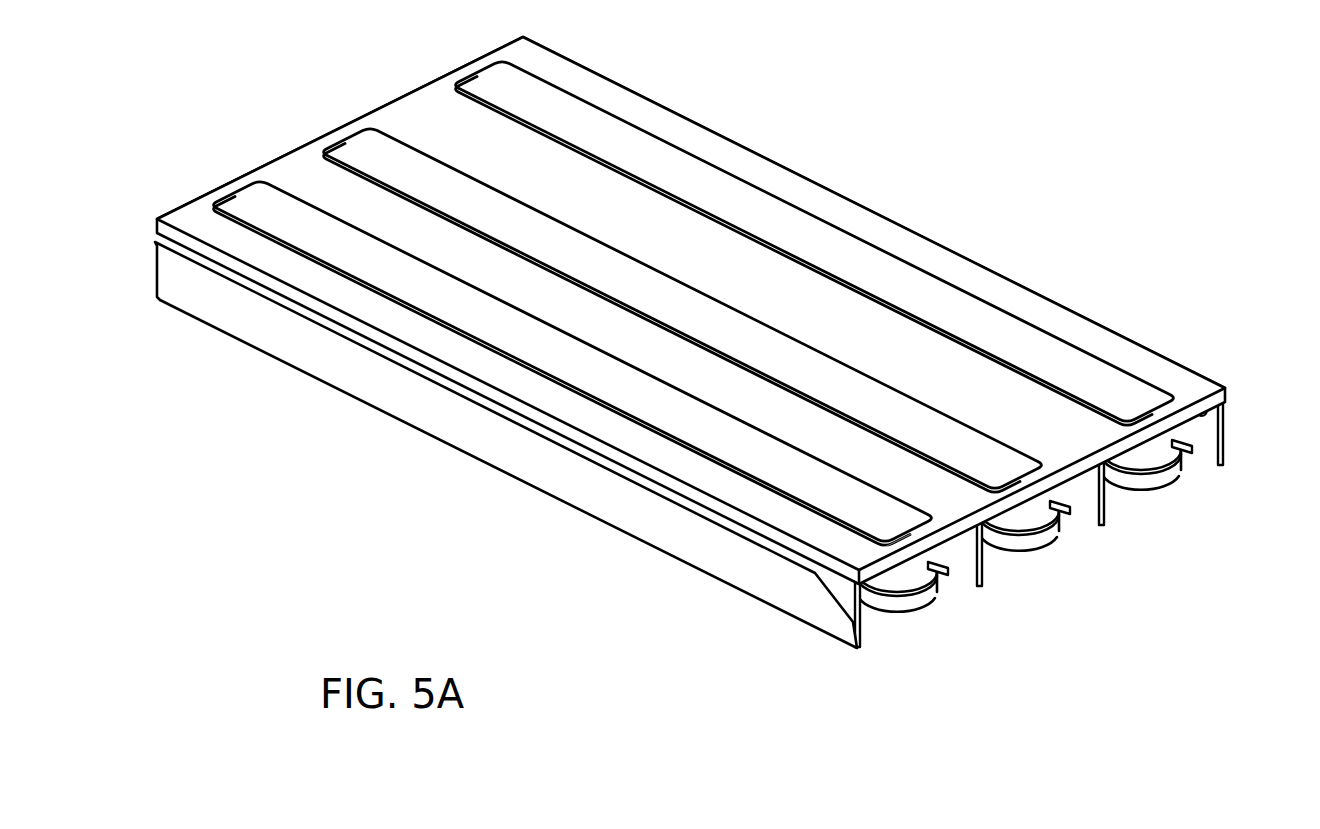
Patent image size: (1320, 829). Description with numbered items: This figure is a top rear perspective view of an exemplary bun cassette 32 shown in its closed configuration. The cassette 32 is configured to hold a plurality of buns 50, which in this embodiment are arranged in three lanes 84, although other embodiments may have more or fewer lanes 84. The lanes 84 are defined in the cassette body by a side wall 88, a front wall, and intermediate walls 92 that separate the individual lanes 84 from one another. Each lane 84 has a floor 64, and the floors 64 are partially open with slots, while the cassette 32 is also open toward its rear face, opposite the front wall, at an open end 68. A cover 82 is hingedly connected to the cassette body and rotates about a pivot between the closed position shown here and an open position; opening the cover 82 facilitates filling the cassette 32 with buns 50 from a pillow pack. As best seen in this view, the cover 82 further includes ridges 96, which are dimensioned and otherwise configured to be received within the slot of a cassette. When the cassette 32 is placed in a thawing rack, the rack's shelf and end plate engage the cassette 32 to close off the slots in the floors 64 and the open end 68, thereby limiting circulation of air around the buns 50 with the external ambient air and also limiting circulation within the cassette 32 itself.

The cassette 32 is at (737, 378).
The buns 50 is at (887, 598).
The floors 64 is at (934, 570).
The open end 68 is at (986, 645).
The cover 82 is at (1097, 340).
The lanes 84 is at (913, 615).
The side wall 88 is at (462, 428).
The intermediate walls 92 is at (958, 548).
The ridges 96 is at (488, 80).